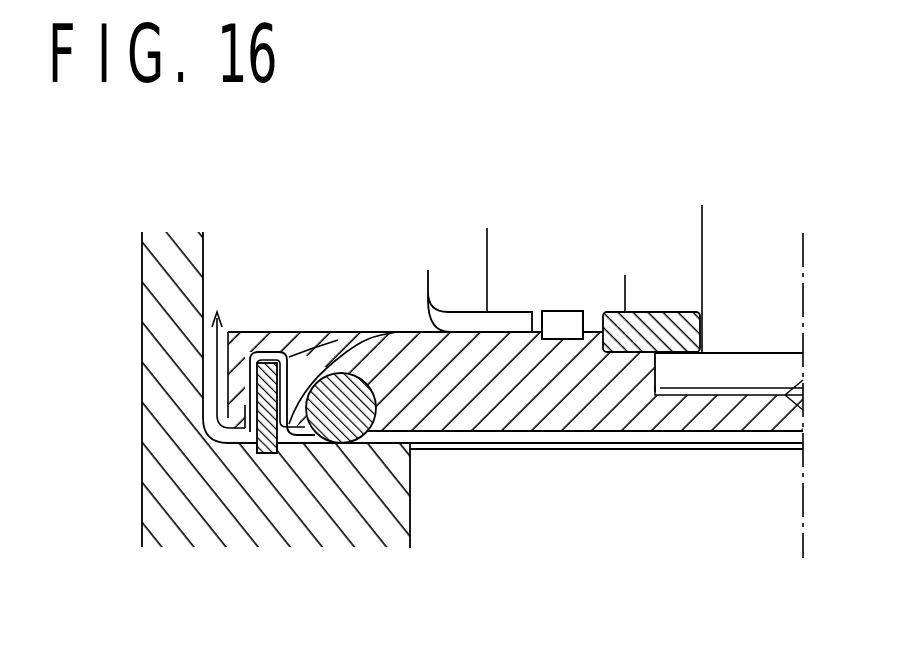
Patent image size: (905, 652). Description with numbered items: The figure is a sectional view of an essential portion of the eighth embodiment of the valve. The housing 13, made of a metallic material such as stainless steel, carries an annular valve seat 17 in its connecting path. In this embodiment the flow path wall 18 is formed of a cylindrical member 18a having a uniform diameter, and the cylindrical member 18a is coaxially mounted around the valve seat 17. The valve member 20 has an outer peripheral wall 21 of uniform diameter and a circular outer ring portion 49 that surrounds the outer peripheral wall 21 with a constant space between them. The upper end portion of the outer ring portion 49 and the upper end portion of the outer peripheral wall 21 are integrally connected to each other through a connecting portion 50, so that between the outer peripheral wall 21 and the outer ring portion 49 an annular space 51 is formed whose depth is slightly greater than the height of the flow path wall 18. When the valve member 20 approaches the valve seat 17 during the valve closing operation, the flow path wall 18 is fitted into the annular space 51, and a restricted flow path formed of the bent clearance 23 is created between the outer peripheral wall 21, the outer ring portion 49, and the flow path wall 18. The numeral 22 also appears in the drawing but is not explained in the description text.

The housing 13 is at (160, 280).
The valve seat 17 is at (350, 420).
The flow path wall 18 is at (245, 330).
The cylindrical member 18a is at (262, 453).
The valve member 20 is at (678, 415).
The outer peripheral wall 21 is at (376, 332).
The contact portion 22 is at (361, 438).
The bent clearance 23 is at (244, 403).
The outer ring portion 49 is at (241, 364).
The connecting portion 50 is at (270, 338).
The annular space 51 is at (314, 350).